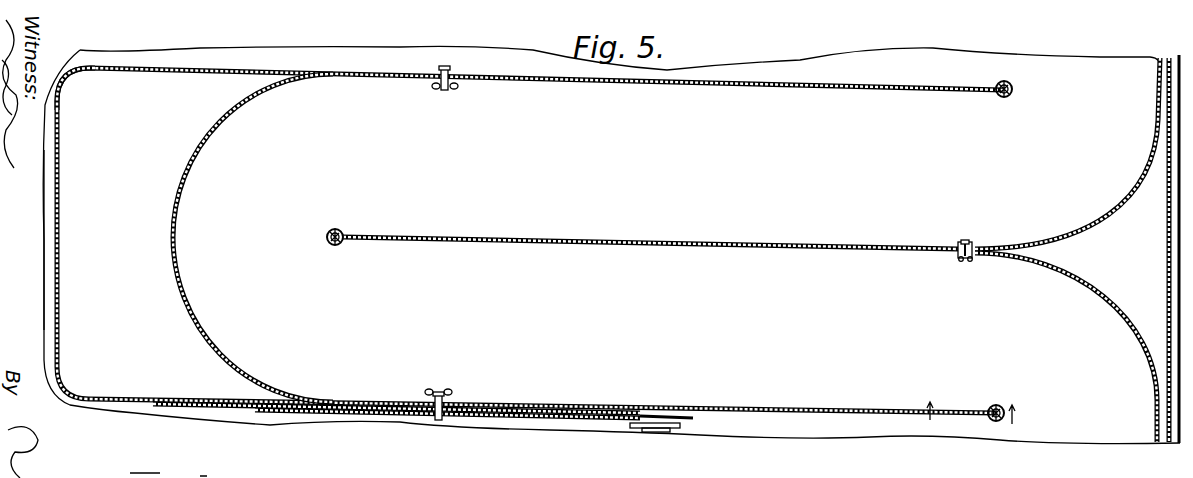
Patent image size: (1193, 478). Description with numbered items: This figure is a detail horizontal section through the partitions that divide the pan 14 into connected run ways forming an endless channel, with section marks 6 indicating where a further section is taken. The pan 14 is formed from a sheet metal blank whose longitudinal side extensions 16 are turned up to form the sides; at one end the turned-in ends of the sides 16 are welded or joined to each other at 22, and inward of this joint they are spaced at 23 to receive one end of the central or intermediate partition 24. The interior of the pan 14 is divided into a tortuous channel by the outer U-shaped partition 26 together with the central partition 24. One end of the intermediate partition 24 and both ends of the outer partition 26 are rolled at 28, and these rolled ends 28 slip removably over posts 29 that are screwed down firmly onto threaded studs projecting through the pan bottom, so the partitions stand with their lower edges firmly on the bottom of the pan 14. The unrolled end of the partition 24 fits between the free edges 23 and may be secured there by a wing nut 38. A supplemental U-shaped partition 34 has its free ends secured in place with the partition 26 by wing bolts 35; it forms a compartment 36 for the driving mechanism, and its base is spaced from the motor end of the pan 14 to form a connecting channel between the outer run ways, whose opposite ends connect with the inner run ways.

The pan 14 is at (415, 238).
The longitudinal side extensions 16 is at (1077, 233).
The joint of side ends 22 is at (973, 247).
The spaced ends of sides 23 is at (974, 259).
The central or intermediate partition 24 is at (812, 250).
The outer U-shaped partition 26 is at (912, 85).
The rolled ends 28 is at (1005, 82).
The posts 29 is at (1013, 88).
The supplemental U-shaped partition 34 is at (80, 70).
The wing bolts 35 is at (450, 88).
The compartment 36 is at (87, 198).
The wing nut 38 is at (959, 261).
The section line 6 is at (970, 419).